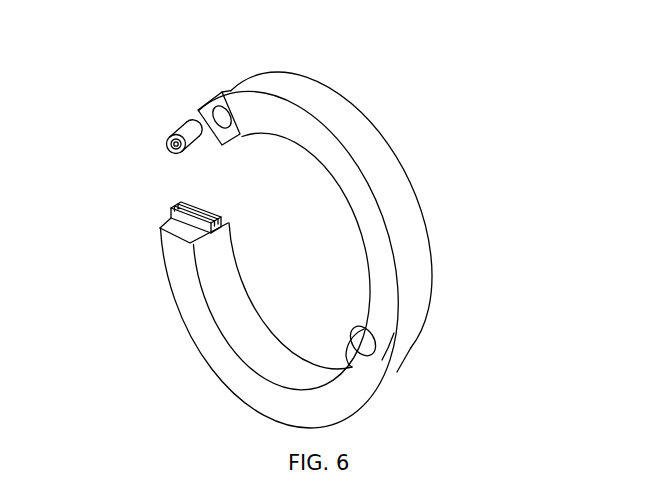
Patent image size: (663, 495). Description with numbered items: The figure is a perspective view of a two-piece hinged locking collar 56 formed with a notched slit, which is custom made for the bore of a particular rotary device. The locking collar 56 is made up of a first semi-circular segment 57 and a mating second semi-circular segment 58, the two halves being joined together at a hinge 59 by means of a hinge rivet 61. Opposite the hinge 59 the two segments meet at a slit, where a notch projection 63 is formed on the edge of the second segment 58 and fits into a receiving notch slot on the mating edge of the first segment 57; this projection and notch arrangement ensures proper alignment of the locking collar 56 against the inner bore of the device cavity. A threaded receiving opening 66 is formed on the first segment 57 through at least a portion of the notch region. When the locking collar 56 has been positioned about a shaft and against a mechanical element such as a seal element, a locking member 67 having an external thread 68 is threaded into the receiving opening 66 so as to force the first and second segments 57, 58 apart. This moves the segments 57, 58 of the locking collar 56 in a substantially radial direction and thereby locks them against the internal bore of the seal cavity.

The locking collar 56 is at (446, 192).
The first semi-circular segment 57 is at (338, 122).
The second semi-circular segment 58 is at (225, 357).
The hinge 59 is at (385, 350).
The hinge rivet 61 is at (359, 340).
The notch projection 63 is at (171, 208).
The threaded receiving opening 66 is at (222, 92).
The locking member 67 is at (172, 145).
The external thread 68 is at (185, 124).